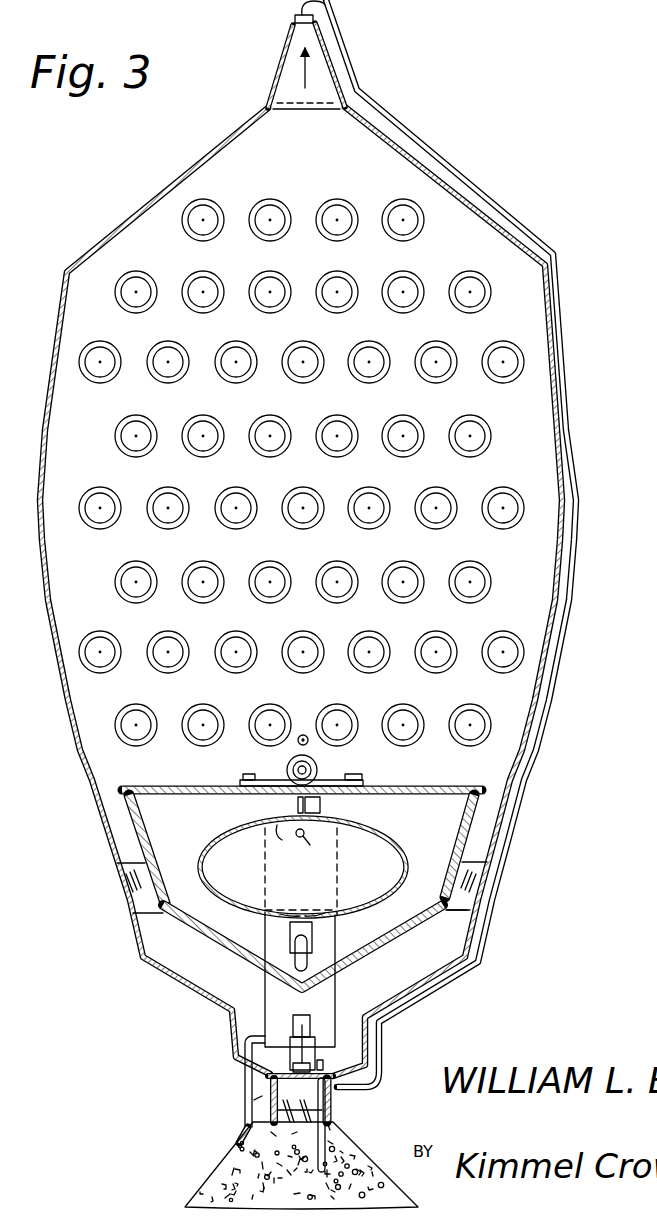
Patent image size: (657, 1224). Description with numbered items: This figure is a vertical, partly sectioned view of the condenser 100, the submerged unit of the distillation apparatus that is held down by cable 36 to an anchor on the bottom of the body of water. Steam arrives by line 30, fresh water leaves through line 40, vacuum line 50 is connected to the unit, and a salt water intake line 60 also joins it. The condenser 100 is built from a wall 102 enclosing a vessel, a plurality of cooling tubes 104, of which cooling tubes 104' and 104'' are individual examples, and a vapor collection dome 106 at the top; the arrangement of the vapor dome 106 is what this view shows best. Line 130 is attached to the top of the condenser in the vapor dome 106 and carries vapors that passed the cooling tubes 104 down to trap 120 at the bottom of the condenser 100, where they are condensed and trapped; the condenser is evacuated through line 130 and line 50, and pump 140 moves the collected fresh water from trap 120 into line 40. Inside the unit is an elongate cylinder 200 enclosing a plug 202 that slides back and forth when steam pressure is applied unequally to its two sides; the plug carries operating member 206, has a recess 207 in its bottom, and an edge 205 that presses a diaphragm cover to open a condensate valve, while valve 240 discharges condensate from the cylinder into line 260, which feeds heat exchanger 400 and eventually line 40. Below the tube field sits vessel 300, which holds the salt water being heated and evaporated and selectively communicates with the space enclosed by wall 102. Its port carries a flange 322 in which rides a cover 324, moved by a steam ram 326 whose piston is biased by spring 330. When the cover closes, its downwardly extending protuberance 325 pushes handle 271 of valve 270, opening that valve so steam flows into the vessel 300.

The condenser 100 is at (46, 370).
The wall 102 is at (446, 414).
The cooling tubes 104 is at (327, 570).
The cooling tube 104' is at (321, 497).
The cooling tube 104'' is at (288, 427).
The vapor collection dome 106 is at (282, 62).
The line 130 is at (499, 208).
The elongate cylinder 200 is at (210, 838).
The plug 202 is at (326, 894).
The edge 205 is at (318, 912).
The operating member 206 is at (317, 848).
The recess 207 is at (292, 913).
The valve 240 is at (290, 928).
The line 260 is at (320, 952).
The valve 270 is at (322, 811).
The handle 271 is at (283, 843).
The vessel 300 is at (252, 962).
The flange 322 is at (249, 777).
The cover 324 is at (266, 776).
The protuberance 325 is at (298, 804).
The steam ram 326 is at (314, 764).
The spring 330 is at (320, 778).
The heat exchanger 400 is at (342, 984).
The pump 140 is at (328, 1015).
The salt water intake line 60 is at (245, 1090).
The vacuum trap 120 is at (262, 1096).
The cable 36 is at (244, 1130).
The line 40 is at (300, 1099).
The vacuum line 50 is at (313, 1100).
The line 30 is at (330, 1122).